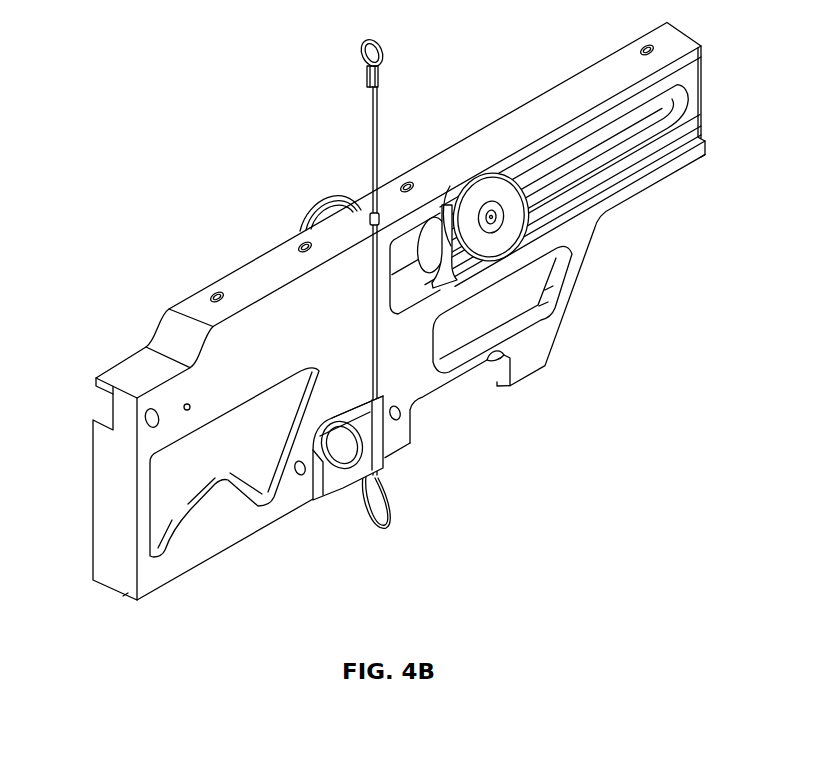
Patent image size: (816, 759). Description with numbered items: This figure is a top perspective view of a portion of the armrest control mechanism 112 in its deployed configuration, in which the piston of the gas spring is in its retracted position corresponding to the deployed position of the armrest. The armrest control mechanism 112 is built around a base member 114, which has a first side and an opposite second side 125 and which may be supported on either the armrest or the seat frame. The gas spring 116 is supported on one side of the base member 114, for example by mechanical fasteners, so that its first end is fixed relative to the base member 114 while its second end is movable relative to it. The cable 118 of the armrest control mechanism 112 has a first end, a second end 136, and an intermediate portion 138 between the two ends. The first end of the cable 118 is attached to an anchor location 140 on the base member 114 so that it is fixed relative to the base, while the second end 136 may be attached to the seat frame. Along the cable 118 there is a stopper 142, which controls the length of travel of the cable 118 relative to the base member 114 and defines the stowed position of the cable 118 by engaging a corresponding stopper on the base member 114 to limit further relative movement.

The armrest control mechanism 112 is at (180, 155).
The base member 114 is at (527, 358).
The gas spring 116 is at (418, 248).
The cable 118 is at (364, 115).
The second side 125 is at (198, 557).
The second end 136 is at (384, 50).
The intermediate portion 138 is at (390, 518).
The anchor location 140 is at (328, 202).
The stopper 142 is at (369, 217).